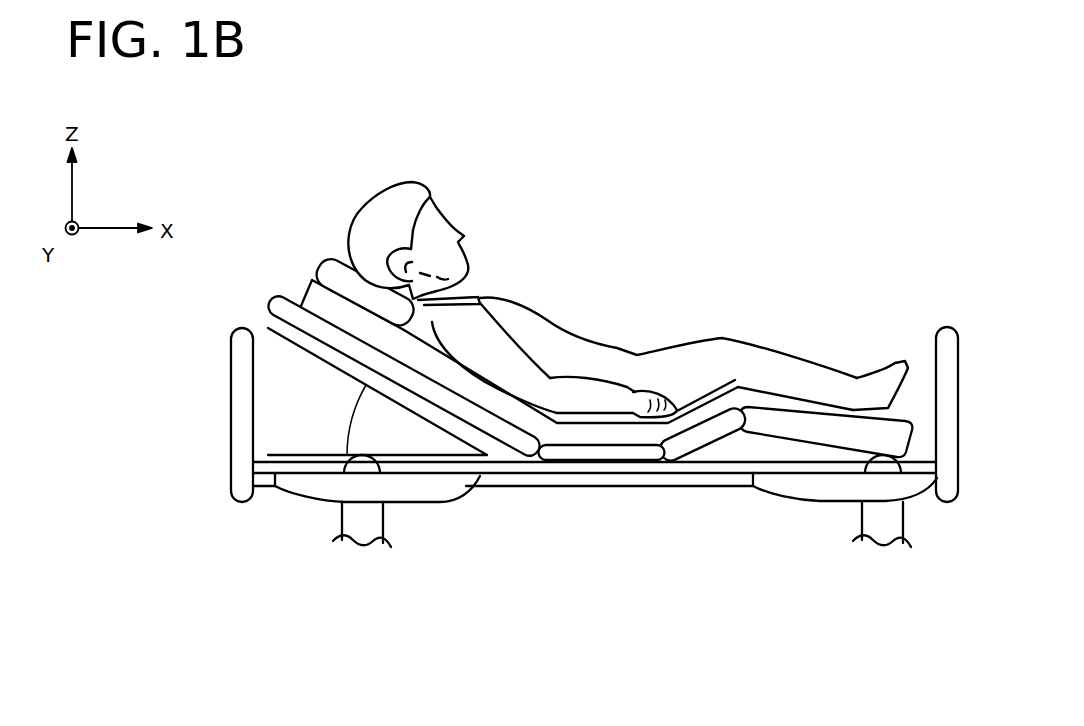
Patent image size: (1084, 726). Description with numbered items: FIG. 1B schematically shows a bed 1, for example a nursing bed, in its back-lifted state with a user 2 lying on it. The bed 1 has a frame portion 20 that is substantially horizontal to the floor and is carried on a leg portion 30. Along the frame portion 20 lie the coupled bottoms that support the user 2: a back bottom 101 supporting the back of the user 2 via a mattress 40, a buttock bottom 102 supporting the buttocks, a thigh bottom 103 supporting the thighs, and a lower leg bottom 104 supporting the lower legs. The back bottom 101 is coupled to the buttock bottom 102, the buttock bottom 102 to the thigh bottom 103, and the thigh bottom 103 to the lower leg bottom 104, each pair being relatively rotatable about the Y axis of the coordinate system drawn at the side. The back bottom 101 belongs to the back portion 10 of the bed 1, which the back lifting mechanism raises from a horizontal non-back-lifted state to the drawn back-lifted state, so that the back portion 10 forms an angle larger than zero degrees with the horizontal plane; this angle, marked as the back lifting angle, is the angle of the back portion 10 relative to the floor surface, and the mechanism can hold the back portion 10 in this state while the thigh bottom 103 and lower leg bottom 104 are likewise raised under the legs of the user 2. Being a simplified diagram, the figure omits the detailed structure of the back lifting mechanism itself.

The bed 1 is at (256, 268).
The user 2 is at (543, 293).
The back portion 10 is at (590, 448).
The back bottom 101 is at (497, 430).
The buttock bottom 102 is at (607, 452).
The thigh bottom 103 is at (717, 430).
The lower leg bottom 104 is at (823, 434).
The frame portion 20 is at (553, 492).
The leg portion 30 is at (383, 520).
The mattress 40 is at (317, 292).